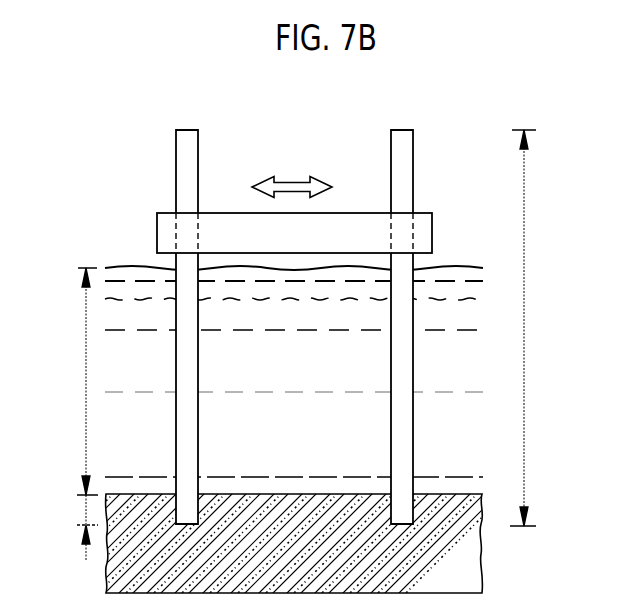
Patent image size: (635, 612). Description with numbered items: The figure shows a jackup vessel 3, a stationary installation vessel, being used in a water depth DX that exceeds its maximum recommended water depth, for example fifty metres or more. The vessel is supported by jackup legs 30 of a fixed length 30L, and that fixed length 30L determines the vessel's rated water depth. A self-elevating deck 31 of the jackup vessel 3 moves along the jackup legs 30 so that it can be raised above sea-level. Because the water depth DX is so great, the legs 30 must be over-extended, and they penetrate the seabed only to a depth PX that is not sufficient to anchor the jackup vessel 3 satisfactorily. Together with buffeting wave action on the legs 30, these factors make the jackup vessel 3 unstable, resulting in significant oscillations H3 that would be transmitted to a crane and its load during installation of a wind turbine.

The jackup vessel 3 is at (310, 286).
The jackup legs 30 is at (186, 148).
The deck 31 is at (420, 233).
The fixed length of the jackup legs 30L is at (526, 325).
The oscillations H3 is at (291, 182).
The water depth DX is at (86, 383).
The penetration depth PX is at (86, 518).